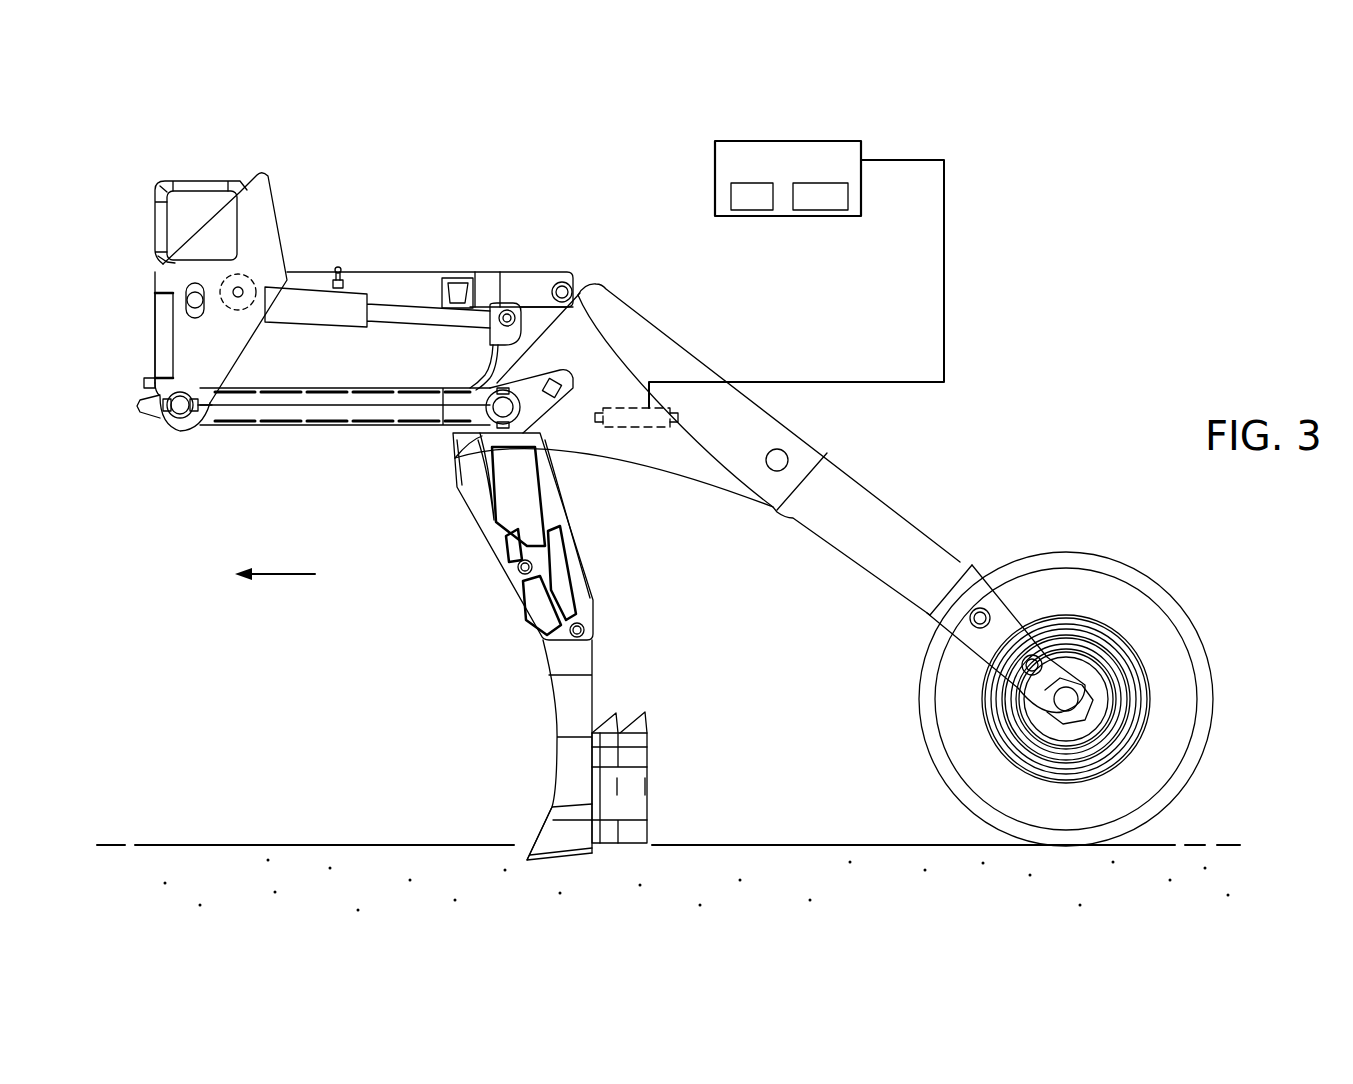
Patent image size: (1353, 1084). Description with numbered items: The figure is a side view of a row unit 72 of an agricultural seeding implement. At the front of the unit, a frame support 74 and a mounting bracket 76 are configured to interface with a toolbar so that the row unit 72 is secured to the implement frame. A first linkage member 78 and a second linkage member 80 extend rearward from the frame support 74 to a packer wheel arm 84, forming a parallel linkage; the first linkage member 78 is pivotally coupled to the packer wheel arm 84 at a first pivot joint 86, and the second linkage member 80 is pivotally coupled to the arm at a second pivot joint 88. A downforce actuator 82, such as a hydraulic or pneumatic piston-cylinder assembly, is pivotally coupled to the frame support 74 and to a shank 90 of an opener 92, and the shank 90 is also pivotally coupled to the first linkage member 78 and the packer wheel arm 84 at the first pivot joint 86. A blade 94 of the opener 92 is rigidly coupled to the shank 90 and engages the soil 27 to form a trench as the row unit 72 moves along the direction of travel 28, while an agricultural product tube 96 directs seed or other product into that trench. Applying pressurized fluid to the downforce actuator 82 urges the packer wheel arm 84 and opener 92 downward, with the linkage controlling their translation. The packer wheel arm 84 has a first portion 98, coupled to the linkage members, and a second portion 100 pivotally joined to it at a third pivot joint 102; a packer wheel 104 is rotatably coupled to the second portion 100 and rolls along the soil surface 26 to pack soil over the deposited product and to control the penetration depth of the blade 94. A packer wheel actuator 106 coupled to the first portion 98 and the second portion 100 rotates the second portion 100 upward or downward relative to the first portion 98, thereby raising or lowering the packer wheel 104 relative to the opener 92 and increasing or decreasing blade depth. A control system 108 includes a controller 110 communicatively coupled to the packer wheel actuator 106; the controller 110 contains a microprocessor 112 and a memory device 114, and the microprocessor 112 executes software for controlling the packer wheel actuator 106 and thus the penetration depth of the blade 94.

The soil surface 26 is at (1160, 845).
The soil 27 is at (768, 885).
The direction of travel 28 is at (282, 574).
The row unit 72 is at (636, 254).
The frame support 74 is at (262, 222).
The mounting bracket 76 is at (205, 180).
The first linkage member 78 is at (297, 425).
The second linkage member 80 is at (404, 277).
The downforce actuator 82 is at (348, 318).
The packer wheel arm 84 is at (705, 318).
The first pivot joint 86 is at (480, 438).
The second pivot joint 88 is at (556, 280).
The shank 90 is at (573, 535).
The opener 92 is at (472, 566).
The blade 94 is at (545, 830).
The agricultural product tube 96 is at (605, 725).
The first portion 98 is at (630, 463).
The second portion 100 is at (735, 407).
The third pivot joint 102 is at (781, 450).
The packer wheel 104 is at (1150, 590).
The packer wheel actuator 106 is at (627, 407).
The control system 108 is at (803, 108).
The controller 110 is at (722, 141).
The microprocessor 112 is at (742, 216).
The memory device 114 is at (815, 216).